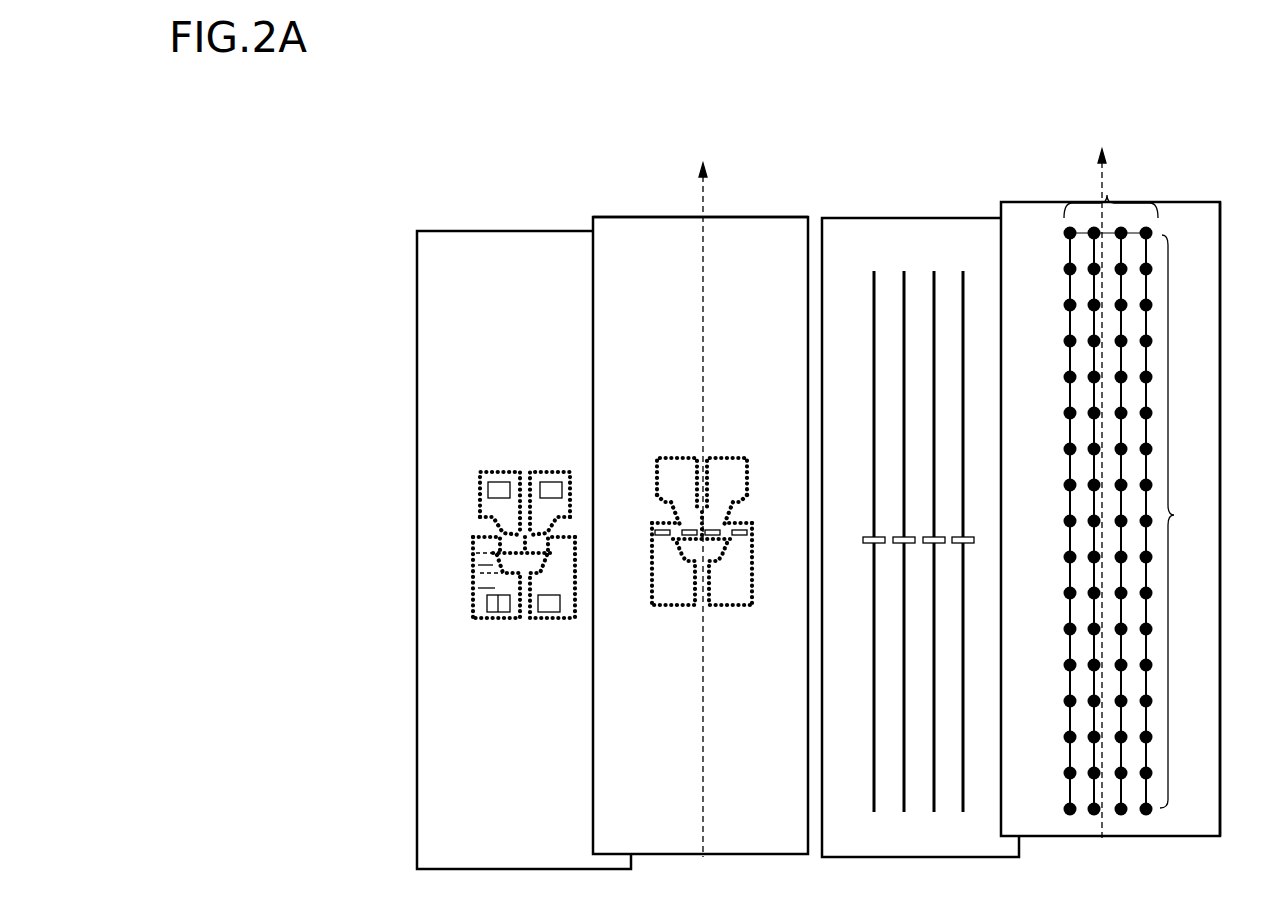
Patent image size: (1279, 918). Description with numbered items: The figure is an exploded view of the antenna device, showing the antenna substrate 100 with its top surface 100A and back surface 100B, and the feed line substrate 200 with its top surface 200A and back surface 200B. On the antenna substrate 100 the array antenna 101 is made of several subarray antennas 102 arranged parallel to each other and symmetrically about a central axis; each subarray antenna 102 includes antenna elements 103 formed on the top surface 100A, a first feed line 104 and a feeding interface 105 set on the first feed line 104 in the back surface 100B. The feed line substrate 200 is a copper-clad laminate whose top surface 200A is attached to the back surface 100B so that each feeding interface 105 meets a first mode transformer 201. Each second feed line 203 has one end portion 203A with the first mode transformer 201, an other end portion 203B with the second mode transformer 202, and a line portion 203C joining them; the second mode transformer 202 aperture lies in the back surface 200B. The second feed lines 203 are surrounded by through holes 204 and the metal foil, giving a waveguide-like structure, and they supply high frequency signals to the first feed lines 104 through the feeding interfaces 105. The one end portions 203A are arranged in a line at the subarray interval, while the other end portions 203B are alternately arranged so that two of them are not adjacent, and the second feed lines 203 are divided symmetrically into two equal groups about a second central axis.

The antenna substrate 100 is at (1183, 200).
The top surface 100A is at (1221, 248).
The back surface 100B is at (985, 218).
The array antenna 101 is at (1091, 201).
The subarray antenna 102 is at (1190, 521).
The antenna element 103 is at (1148, 413).
The first feed line 104 is at (871, 420).
The feeding interface 105 is at (870, 540).
The feed line substrate 200 is at (778, 216).
The top surface 200A is at (622, 216).
The back surface 200B is at (444, 231).
The first mode transformer 201 is at (657, 532).
The second mode transformer 202 is at (487, 621).
The second feed line 203 is at (382, 548).
The one end portion 203A is at (475, 545).
The other end portion 203B is at (478, 590).
The line portion 203C is at (478, 568).
The through hole 204 is at (480, 473).